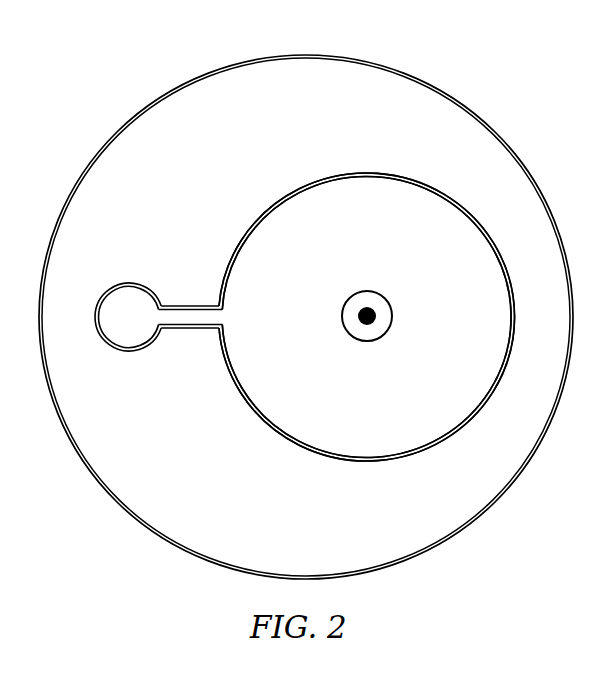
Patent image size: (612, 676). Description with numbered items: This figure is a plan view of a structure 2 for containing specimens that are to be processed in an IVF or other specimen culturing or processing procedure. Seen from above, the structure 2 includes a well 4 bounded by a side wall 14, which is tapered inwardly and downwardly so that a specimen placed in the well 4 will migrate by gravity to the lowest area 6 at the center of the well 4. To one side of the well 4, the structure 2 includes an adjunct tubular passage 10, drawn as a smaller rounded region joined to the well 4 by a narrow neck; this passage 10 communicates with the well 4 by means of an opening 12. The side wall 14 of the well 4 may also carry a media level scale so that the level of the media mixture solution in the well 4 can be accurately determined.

The structure 2 is at (418, 72).
The well 4 is at (310, 228).
The lowest area 6 is at (351, 311).
The adjunct tubular passage 10 is at (128, 305).
The opening 12 is at (190, 318).
The side wall 14 is at (379, 200).